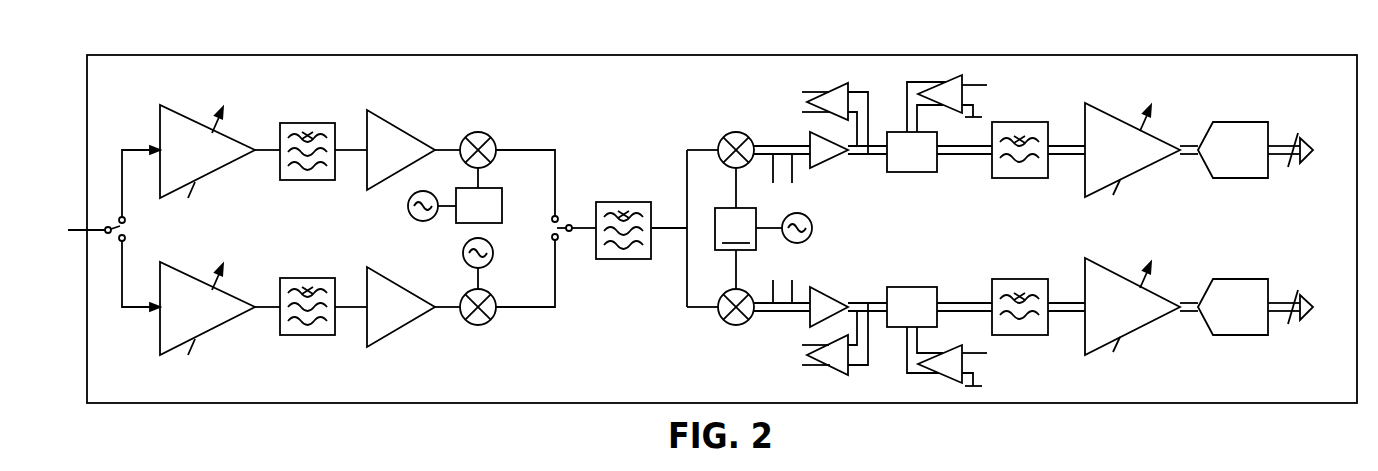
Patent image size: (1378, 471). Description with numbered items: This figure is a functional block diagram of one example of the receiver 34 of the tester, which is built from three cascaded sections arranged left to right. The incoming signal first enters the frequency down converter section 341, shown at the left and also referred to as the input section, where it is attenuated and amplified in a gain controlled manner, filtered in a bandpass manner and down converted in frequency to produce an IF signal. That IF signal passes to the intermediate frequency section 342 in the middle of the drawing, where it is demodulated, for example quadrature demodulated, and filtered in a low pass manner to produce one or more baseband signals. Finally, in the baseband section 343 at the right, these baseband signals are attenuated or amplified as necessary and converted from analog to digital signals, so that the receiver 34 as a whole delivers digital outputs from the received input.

The receiver section 34 is at (887, 55).
The frequency down converter section 341 is at (327, 244).
The intermediate frequency (IF) section 342 is at (889, 243).
The baseband section 343 is at (1162, 243).